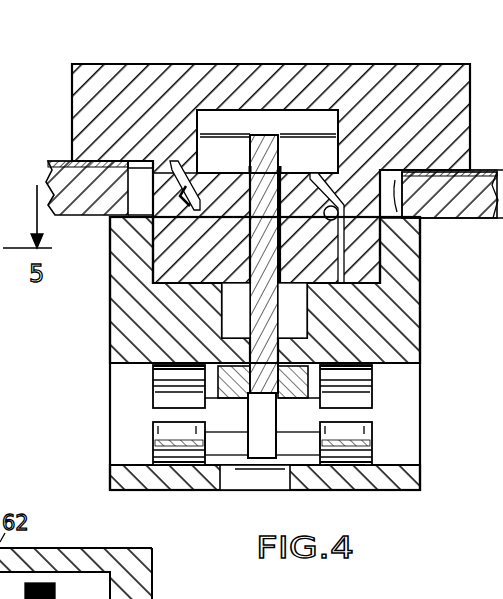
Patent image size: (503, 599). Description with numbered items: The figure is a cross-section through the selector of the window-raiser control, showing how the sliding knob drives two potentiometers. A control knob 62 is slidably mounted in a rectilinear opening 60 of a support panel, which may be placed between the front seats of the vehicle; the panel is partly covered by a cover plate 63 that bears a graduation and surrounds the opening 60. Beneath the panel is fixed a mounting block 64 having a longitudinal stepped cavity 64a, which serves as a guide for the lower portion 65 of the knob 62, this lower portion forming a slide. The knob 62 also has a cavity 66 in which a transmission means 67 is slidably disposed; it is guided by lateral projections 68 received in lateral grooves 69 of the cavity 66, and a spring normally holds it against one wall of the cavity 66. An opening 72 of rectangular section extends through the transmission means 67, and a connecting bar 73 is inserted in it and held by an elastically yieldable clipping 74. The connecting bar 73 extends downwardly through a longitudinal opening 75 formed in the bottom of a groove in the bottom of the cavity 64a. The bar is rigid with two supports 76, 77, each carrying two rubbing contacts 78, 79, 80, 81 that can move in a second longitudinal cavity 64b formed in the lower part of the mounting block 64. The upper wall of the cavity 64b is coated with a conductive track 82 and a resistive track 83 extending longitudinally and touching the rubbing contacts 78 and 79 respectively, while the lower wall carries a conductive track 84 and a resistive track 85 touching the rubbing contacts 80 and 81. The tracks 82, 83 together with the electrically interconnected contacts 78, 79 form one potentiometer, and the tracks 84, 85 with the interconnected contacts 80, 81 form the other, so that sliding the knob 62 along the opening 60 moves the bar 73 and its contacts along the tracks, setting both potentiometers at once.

The rectilinear opening 60 is at (415, 247).
The control knob 62 is at (438, 117).
The cover plate 63 is at (480, 173).
The mounting block 64 is at (403, 321).
The longitudinal stepped cavity 64a is at (418, 272).
The second longitudinal cavity 64b is at (393, 417).
The lower portion of the knob 65 is at (170, 247).
The cavity of the knob 66 is at (278, 114).
The transmission means 67 is at (304, 193).
The lateral projections 68 is at (186, 188).
The lateral grooves 69 is at (339, 217).
The opening of rectangular section 72 is at (298, 322).
The connecting bar 73 is at (234, 322).
The elastically yieldable clipping 74 is at (270, 152).
The longitudinal opening 75 is at (277, 355).
The support 76 is at (290, 406).
The support 77 is at (222, 440).
The rubbing contact 78 is at (153, 372).
The rubbing contact 79 is at (372, 377).
The rubbing contact 80 is at (165, 448).
The rubbing contact 81 is at (362, 462).
The conductive track 82 is at (178, 365).
The resistive track 83 is at (350, 367).
The conductive track 84 is at (180, 465).
The resistive track 85 is at (342, 467).